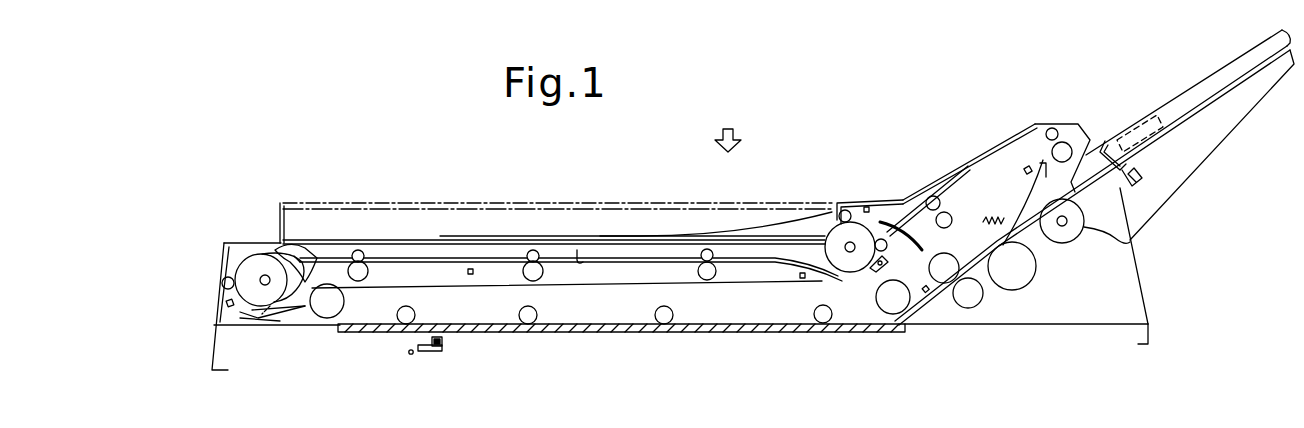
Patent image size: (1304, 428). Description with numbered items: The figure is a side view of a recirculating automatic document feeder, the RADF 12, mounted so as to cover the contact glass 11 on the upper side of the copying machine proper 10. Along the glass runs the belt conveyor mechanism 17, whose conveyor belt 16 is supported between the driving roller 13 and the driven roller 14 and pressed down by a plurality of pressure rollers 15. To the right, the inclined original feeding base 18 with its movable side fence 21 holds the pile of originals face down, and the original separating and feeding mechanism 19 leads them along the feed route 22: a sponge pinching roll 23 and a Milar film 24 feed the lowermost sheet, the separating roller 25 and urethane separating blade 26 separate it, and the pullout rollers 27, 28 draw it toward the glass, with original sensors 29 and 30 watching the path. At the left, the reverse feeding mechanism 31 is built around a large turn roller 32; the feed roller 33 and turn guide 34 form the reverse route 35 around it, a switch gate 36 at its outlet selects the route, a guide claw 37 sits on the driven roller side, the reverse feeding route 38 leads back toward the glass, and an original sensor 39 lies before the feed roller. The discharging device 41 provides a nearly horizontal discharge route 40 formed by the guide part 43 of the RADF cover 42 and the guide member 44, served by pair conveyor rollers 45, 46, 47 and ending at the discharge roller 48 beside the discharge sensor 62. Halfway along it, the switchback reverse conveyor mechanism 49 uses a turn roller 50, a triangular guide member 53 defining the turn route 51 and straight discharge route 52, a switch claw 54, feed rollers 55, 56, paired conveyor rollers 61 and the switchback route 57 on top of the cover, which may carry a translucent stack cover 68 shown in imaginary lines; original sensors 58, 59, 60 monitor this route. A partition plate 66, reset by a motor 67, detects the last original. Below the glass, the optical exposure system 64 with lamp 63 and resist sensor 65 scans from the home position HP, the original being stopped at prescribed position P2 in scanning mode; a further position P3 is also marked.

The copying machine proper 10 is at (213, 352).
The contact glass 11 is at (614, 334).
The RADF 12 is at (728, 130).
The driving roller 13 is at (893, 310).
The driven roller 14 is at (328, 310).
The pressure rollers 15 is at (406, 321).
The conveyor belt 16 is at (568, 289).
The belt conveyor mechanism 17 is at (705, 310).
The original feeding base 18 is at (1228, 103).
The original separating and feeding mechanism 19 is at (1020, 287).
The movable side fence 21 is at (1217, 68).
The feed route 22 is at (982, 276).
The pinching roll 23 is at (1132, 243).
The Milar film 24 is at (1040, 160).
The separating roller 25 is at (1036, 268).
The separating blade 26 is at (990, 215).
The pullout roller 27 is at (984, 222).
The pullout roller 28 is at (973, 302).
The original sensor 29 is at (1052, 246).
The original sensor 30 is at (930, 296).
The reverse feeding mechanism 31 is at (248, 260).
The turn roller 32 is at (237, 275).
The feed roller 33 is at (222, 284).
The turn guide 34 is at (257, 253).
The reverse route 35 is at (237, 267).
The switch gate 36 is at (307, 243).
The guide claw 37 is at (293, 307).
The reverse feeding route 38 is at (312, 257).
The original sensor 39 is at (227, 305).
The discharge route 40 is at (435, 260).
The discharging device 41 is at (499, 268).
The RADF cover 42 is at (397, 252).
The guide part 43 is at (577, 258).
The guide member 44 is at (612, 259).
The pair conveyor rollers 45 is at (366, 260).
The pair conveyor rollers 46 is at (535, 266).
The pair conveyor rollers 47 is at (700, 262).
The discharge roller 48 is at (1080, 137).
The switchback reverse conveyor mechanism 49 is at (827, 235).
The turn roller 50 is at (830, 227).
The turn route 51 is at (877, 213).
The straight discharge route 52 is at (950, 256).
The triangular guide member 53 is at (893, 230).
The switch claw 54 is at (876, 291).
The feed roller 55 is at (882, 262).
The feed roller 56 is at (848, 210).
The switchback route 57 is at (780, 233).
The original sensor 58 is at (470, 269).
The original sensor 59 is at (801, 279).
The original sensor 60 is at (868, 205).
The paired conveyor rollers 61 is at (945, 211).
The discharge sensor 62 is at (1025, 165).
The lamp 63 is at (412, 356).
The optical exposure system 64 is at (430, 358).
The resist sensor 65 is at (446, 347).
The partition plate 66 is at (1107, 148).
The motor 67 is at (1160, 112).
The stack cover 68 is at (285, 207).
The prescribed position P2 is at (367, 343).
The position P3 is at (409, 343).
The home position HP is at (828, 340).